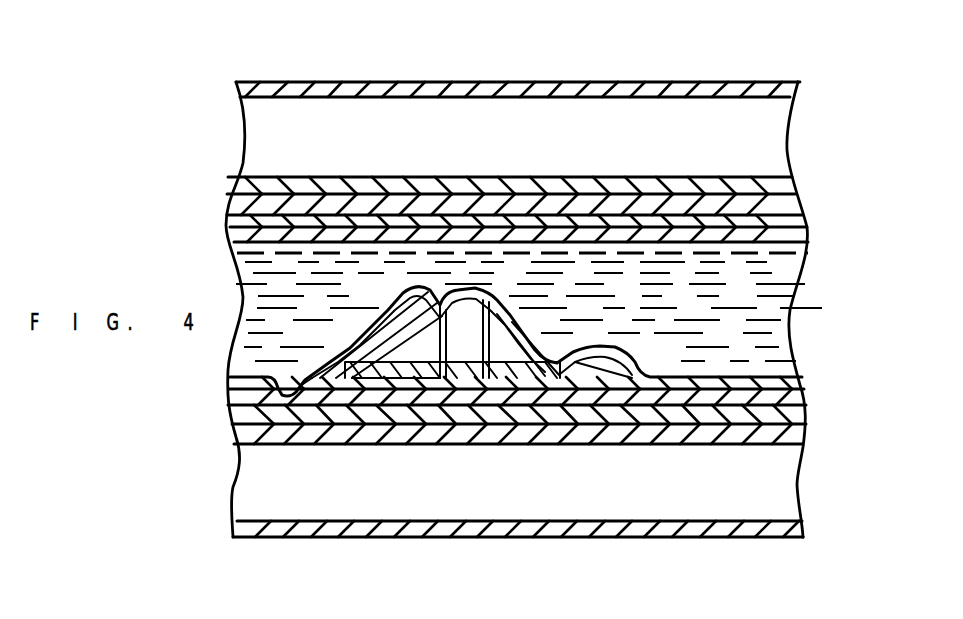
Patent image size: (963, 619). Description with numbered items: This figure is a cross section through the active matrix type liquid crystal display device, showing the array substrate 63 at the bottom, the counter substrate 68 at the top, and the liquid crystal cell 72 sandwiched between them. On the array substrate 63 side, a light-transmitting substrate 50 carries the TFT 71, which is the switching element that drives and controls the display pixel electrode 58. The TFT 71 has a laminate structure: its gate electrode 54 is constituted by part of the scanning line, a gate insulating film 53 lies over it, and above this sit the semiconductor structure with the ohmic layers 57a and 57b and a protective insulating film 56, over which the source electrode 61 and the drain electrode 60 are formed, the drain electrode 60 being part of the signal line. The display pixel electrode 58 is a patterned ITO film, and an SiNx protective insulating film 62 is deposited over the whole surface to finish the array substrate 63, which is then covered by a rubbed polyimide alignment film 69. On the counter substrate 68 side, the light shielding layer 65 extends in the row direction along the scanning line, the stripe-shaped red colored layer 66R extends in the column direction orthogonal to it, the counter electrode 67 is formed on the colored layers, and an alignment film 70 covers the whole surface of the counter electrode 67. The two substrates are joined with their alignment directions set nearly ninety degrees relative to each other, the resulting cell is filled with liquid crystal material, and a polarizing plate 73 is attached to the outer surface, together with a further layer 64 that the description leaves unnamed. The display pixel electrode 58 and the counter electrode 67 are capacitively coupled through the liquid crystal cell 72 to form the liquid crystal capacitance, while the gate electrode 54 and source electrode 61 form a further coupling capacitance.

The counter substrate 68 is at (817, 76).
The polarizing plate 73 is at (697, 82).
The upper glass substrate 64 is at (779, 121).
The light shielding layer 65 is at (786, 189).
The red colored layer 66R is at (781, 208).
The counter electrode 67 is at (788, 237).
The alignment film 70 is at (798, 252).
The TFT 71 is at (792, 308).
The alignment film 69 is at (806, 385).
The protective insulating film 62 is at (805, 393).
The display pixel electrode 58 is at (800, 413).
The gate insulating film 53 is at (802, 437).
The light-transmitting substrate 50 is at (798, 486).
The liquid crystal cell 72 is at (760, 529).
The array substrate 63 is at (798, 545).
The source electrode 61 is at (582, 430).
The ohmic layer 57b is at (545, 418).
The protective insulating film 56 is at (472, 420).
The ohmic layer 57a is at (346, 420).
The drain electrode 60 is at (332, 400).
The gate electrode 54 is at (425, 432).